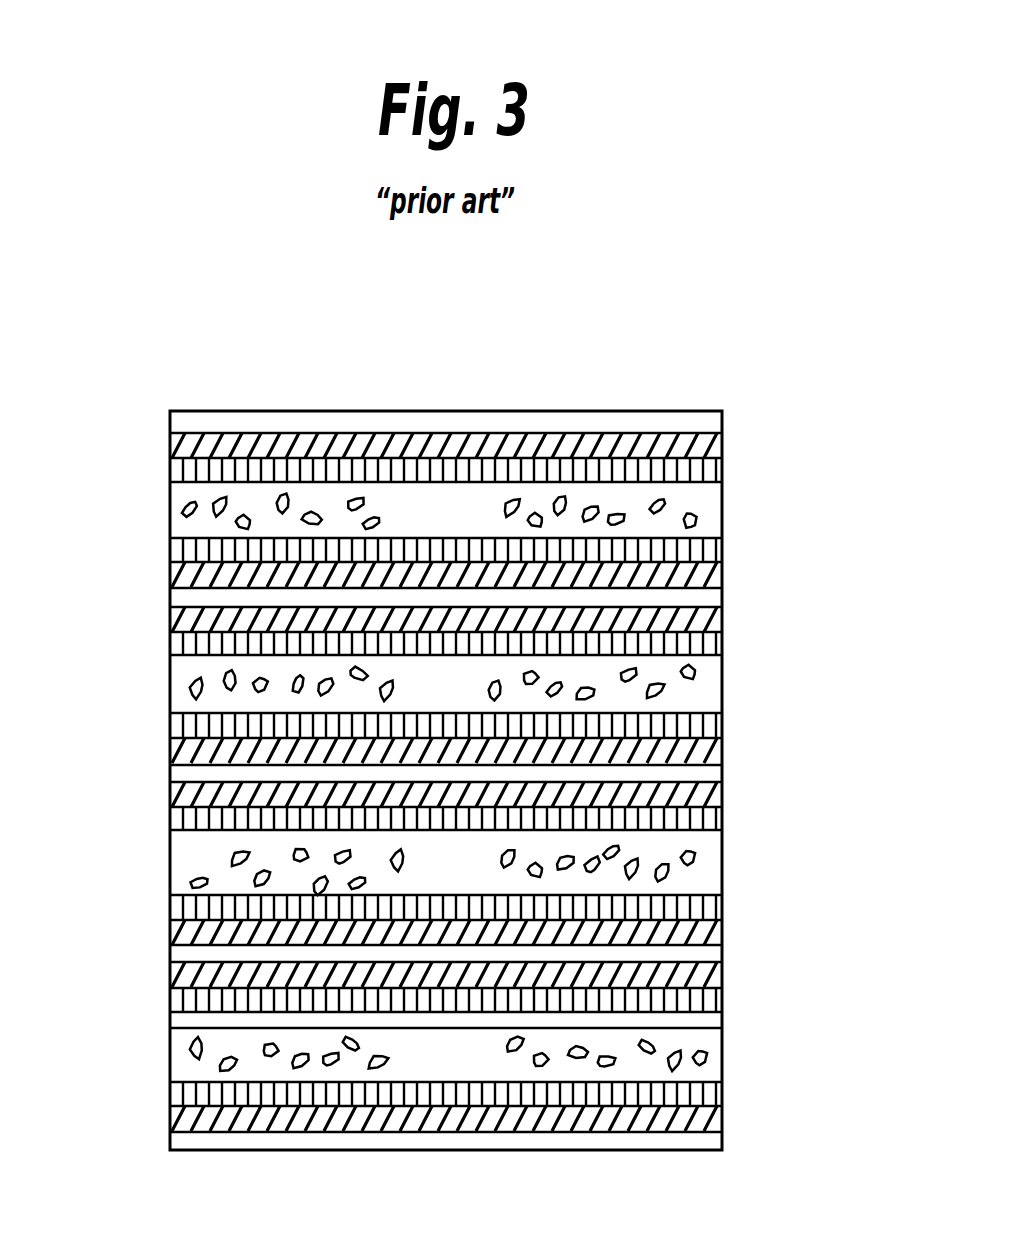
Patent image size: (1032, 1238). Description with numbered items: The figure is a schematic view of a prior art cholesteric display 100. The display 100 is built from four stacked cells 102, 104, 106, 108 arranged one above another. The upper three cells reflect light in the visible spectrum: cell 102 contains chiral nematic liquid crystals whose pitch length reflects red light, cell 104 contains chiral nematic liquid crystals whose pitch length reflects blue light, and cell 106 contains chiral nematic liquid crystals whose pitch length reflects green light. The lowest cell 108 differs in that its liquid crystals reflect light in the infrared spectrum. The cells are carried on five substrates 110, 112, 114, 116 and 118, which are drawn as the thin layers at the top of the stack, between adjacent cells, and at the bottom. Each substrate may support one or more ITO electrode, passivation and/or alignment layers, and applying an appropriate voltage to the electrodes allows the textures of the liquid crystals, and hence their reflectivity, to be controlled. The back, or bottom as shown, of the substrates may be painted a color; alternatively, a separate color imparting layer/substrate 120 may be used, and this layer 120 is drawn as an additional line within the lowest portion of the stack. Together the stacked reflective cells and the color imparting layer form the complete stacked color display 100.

The cholesteric display 100 is at (835, 272).
The cell 102 is at (752, 507).
The cell 104 is at (752, 681).
The cell 106 is at (745, 863).
The cell 108 is at (752, 1054).
The substrate 110 is at (182, 424).
The substrate 112 is at (172, 590).
The substrate 114 is at (176, 773).
The substrate 116 is at (172, 948).
The substrate 118 is at (178, 1138).
The color imparting layer/substrate 120 is at (715, 1021).